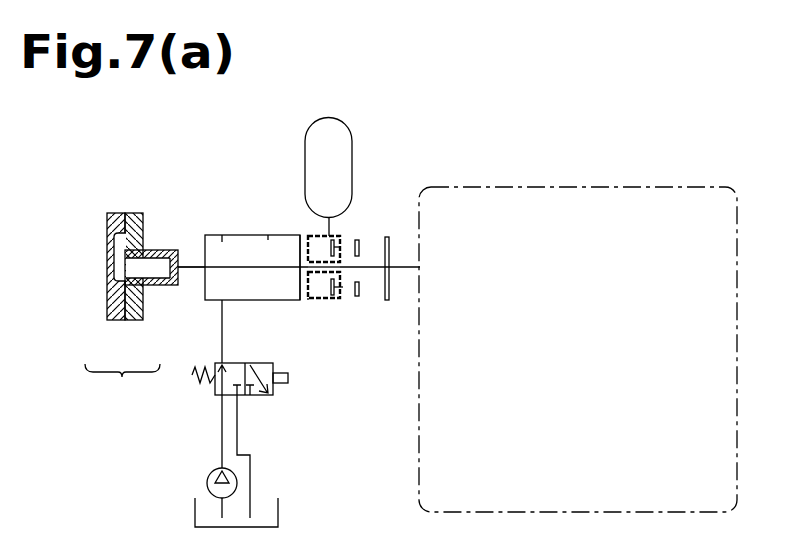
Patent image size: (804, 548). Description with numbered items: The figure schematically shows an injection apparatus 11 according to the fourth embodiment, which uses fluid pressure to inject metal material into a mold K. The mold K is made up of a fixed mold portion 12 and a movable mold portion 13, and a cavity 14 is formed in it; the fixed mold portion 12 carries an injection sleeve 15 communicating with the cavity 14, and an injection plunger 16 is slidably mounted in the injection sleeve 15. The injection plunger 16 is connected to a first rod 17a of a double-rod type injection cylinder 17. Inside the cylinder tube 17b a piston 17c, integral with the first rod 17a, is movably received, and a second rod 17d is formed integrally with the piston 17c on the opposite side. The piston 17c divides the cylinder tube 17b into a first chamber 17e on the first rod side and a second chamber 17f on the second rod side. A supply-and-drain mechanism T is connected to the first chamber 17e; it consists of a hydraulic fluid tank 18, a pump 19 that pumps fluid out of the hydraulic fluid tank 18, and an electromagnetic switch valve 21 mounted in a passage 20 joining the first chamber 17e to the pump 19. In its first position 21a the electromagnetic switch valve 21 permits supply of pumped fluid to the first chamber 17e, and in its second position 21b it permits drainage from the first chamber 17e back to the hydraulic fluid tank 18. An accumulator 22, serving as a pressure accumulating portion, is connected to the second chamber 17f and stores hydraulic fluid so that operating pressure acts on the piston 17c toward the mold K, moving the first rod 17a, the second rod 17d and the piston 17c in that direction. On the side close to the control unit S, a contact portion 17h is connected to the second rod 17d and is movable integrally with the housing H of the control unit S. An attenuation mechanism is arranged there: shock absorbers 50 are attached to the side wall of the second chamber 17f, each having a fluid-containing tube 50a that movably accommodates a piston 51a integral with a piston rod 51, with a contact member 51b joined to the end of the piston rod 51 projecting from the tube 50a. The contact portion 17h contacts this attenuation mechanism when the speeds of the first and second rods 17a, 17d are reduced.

The injection apparatus 11 is at (388, 119).
The fixed mold portion 12 is at (139, 322).
The movable mold portion 13 is at (117, 322).
The cavity 14 is at (113, 257).
The injection sleeve 15 is at (158, 248).
The injection plunger 16 is at (182, 250).
The injection cylinder 17 is at (268, 238).
The first rod 17a is at (190, 272).
The cylinder tube 17b is at (243, 300).
The piston 17c is at (287, 300).
The second rod 17d is at (381, 263).
The first chamber 17e is at (222, 241).
The second chamber 17f is at (303, 300).
The contact portion 17h is at (387, 237).
The hydraulic fluid tank 18 is at (280, 513).
The pump 19 is at (207, 479).
The passage 20 is at (237, 428).
The electromagnetic switch valve 21 is at (215, 393).
The first position 21a is at (218, 362).
The second position 21b is at (273, 391).
The accumulator 22 is at (338, 118).
The shock absorber 50 is at (300, 273).
The tube 50a is at (323, 300).
The piston rod 51 is at (348, 292).
The piston 51a is at (352, 294).
The contact member 51b is at (358, 293).
The housing H is at (560, 186).
The control unit S is at (737, 179).
The mold K is at (122, 385).
The supply-and-drain mechanism T is at (258, 428).